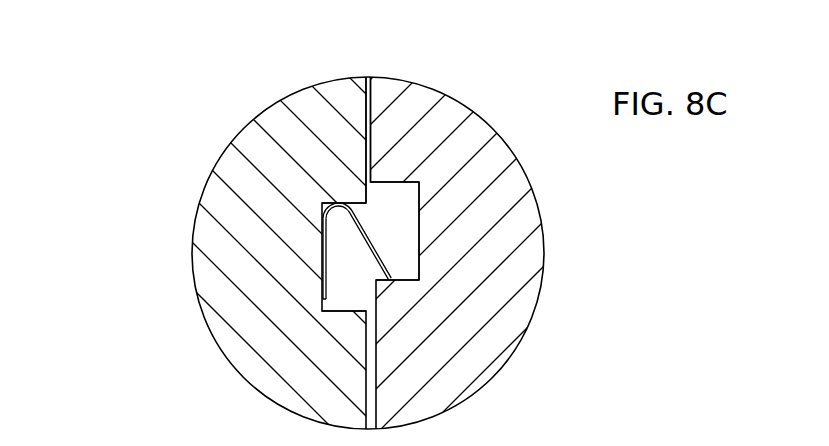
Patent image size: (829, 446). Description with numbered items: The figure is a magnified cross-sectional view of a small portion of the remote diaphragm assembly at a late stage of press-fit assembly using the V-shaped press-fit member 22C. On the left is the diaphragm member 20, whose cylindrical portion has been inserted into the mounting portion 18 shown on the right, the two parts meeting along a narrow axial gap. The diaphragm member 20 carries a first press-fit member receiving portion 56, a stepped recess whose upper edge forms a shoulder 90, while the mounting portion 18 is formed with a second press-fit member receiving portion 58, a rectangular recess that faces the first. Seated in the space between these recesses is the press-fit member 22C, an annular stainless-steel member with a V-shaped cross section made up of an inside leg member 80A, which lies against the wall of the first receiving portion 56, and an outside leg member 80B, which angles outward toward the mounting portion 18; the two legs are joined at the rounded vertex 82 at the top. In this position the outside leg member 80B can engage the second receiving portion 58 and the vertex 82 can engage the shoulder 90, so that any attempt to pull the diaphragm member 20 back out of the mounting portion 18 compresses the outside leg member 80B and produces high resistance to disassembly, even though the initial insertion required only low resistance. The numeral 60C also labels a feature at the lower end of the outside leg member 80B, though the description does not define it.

The mounting portion 18 is at (472, 363).
The diaphragm member 20 is at (220, 321).
The press-fit member 22C is at (367, 222).
The first press-fit member receiving portion 56 is at (335, 307).
The second press-fit member receiving portion 58 is at (379, 187).
The contact portion 60C is at (390, 268).
The inside leg member 80A is at (322, 270).
The outside leg member 80B is at (378, 248).
The vertex 82 is at (330, 202).
The shoulder 90 is at (350, 202).